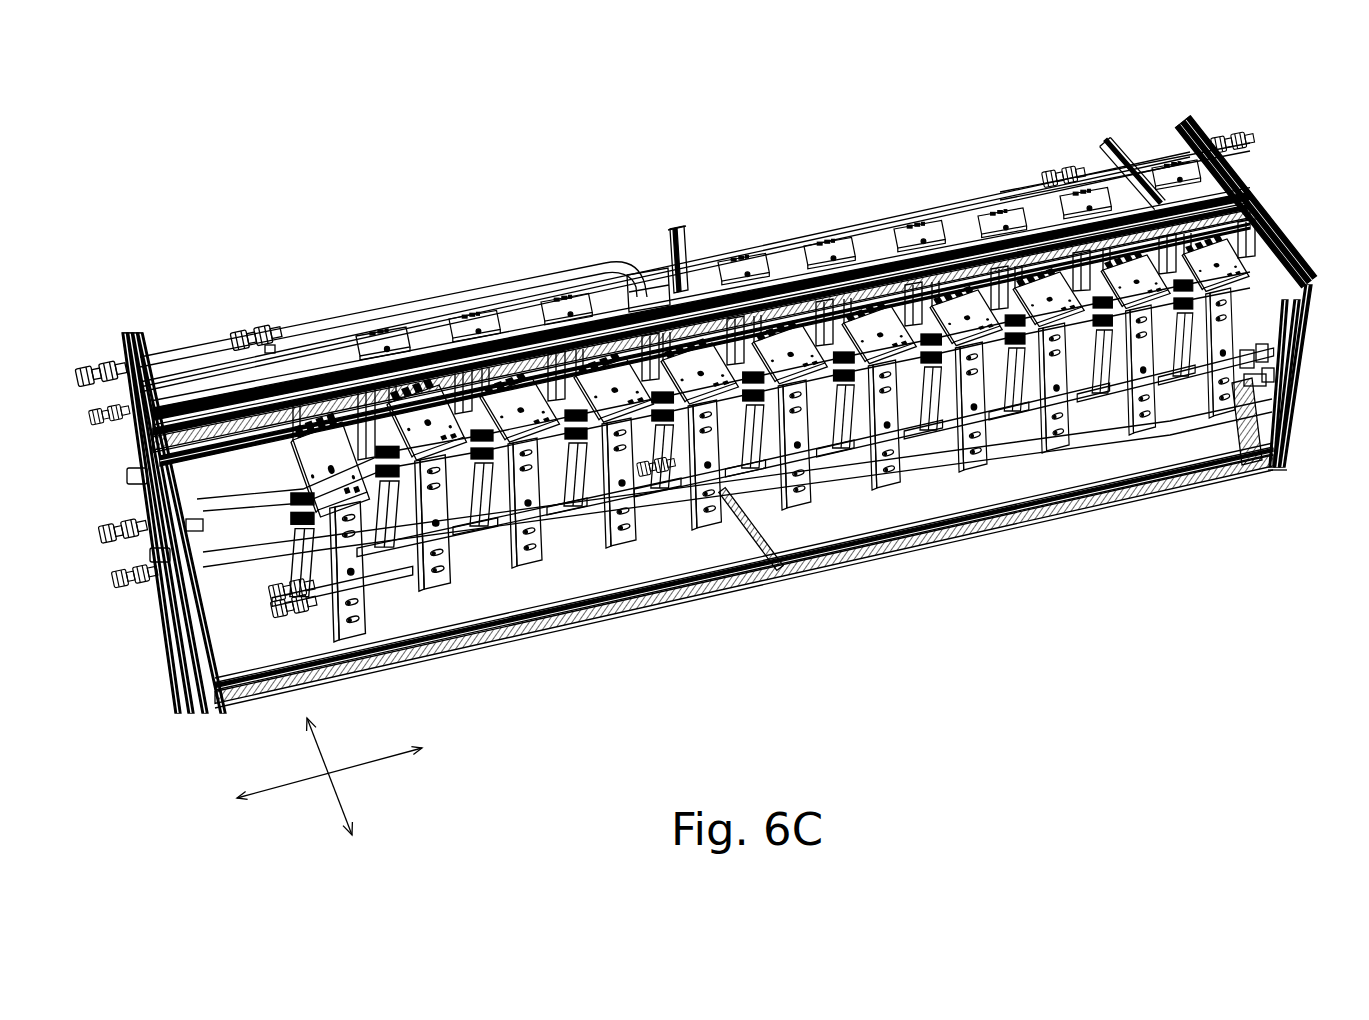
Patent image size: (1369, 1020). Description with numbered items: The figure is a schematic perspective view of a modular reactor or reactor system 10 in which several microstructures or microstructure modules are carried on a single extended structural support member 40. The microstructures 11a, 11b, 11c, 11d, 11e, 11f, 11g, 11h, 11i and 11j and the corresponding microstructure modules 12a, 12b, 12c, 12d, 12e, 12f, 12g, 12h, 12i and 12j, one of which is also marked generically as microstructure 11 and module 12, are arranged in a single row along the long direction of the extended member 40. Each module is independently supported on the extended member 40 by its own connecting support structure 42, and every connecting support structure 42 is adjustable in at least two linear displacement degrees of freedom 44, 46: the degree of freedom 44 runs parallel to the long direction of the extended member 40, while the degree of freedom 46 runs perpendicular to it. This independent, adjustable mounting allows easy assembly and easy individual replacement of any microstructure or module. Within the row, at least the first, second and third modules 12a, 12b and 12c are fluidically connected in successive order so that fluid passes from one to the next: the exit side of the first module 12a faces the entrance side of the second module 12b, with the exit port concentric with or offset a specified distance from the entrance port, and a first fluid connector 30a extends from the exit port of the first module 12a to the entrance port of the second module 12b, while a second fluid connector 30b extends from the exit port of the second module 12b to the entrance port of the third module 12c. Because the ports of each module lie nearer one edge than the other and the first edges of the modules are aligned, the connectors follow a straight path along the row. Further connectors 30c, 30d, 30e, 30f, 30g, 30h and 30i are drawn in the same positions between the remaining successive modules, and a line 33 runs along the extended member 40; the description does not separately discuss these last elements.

The modular reactor or reactor system 10 is at (620, 710).
The microstructure 11 is at (318, 521).
The microstructure module 12 is at (328, 629).
The first microstructure 11a is at (386, 290).
The first microstructure module 12a is at (408, 340).
The second microstructure 11b is at (480, 272).
The second microstructure module 12b is at (497, 323).
The third microstructure 11c is at (571, 253).
The third microstructure module 12c is at (583, 298).
The microstructure 11d is at (653, 240).
The microstructure module 12d is at (670, 280).
The microstructure 11e is at (746, 218).
The microstructure module 12e is at (760, 267).
The microstructure 11f is at (830, 202).
The microstructure module 12f is at (842, 253).
The microstructure 11g is at (920, 184).
The microstructure module 12g is at (927, 237).
The microstructure 11h is at (990, 176).
The microstructure module 12h is at (1017, 210).
The microstructure 11i is at (1063, 166).
The microstructure module 12i is at (1062, 205).
The microstructure 11j is at (1163, 128).
The microstructure module 12j is at (1180, 183).
The first fluid connector 30a is at (466, 537).
The second fluid connector 30b is at (560, 520).
The holding station 30c is at (653, 500).
The holding station 30d is at (755, 480).
The holding station 30e is at (833, 460).
The holding station 30f is at (920, 440).
The holding station 30g is at (1010, 420).
The holding station 30h is at (1110, 400).
The holding station 30i is at (1200, 383).
The fluid line 33 is at (312, 327).
The extended structural support member 40 is at (205, 385).
The connecting support structure 42 is at (283, 433).
The linear displacement degree of freedom 44 is at (368, 758).
The linear displacement degree of freedom 46 is at (333, 797).